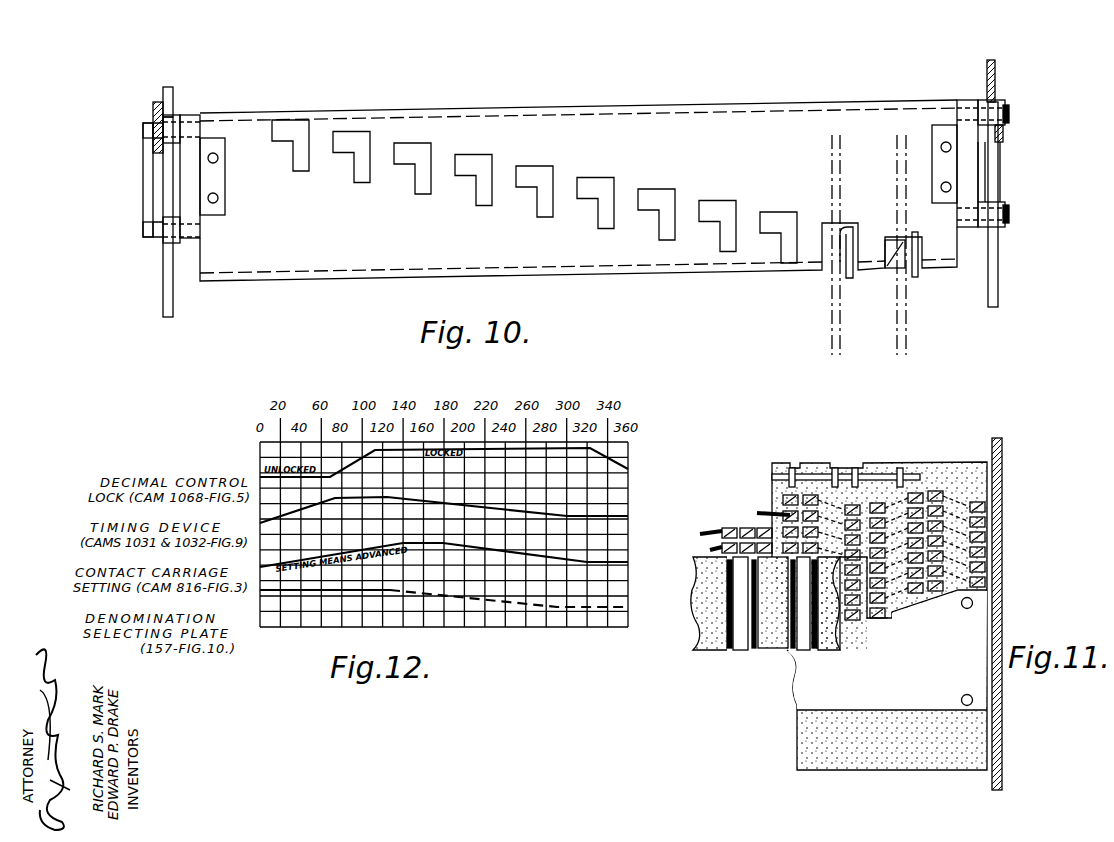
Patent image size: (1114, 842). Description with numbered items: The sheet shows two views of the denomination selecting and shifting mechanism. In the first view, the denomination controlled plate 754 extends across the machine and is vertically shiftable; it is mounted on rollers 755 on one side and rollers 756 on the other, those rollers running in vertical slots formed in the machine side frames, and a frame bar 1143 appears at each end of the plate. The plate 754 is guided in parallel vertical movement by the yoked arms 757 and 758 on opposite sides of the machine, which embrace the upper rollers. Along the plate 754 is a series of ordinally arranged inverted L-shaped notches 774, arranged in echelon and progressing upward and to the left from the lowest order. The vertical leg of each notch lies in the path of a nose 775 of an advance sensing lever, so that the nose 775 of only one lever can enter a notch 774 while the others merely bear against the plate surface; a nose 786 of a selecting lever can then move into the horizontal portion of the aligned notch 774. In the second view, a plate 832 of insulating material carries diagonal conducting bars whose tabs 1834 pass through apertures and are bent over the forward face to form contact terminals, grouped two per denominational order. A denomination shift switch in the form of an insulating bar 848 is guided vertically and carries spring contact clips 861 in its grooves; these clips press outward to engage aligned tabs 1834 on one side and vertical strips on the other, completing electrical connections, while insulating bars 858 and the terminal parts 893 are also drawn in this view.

In FIG. 10, the denomination controlled plate 754 is at (893, 101).
In FIG. 10, the frame bar 1143 is at (172, 96).
In FIG. 10, the yoked arm 758 is at (153, 109).
In FIG. 10, the rollers 756 is at (181, 118).
In FIG. 10, the yoked arm 757 is at (167, 297).
In FIG. 10, the rollers 755 is at (1000, 112).
In FIG. 10, the inverted L-shaped notches 774 is at (848, 226).
In FIG. 10, the nose 786 is at (885, 262).
In FIG. 10, the nose 775 is at (916, 279).
In FIG. 11, the plate of insulating material 832 is at (978, 462).
In FIG. 11, the bar 848 is at (703, 612).
In FIG. 11, the insulating bars 858 is at (753, 650).
In FIG. 11, the spring contact clips 861 is at (733, 628).
In FIG. 11, the contact terminals 893 is at (760, 514).
In FIG. 11, the tabs 1834 is at (722, 545).